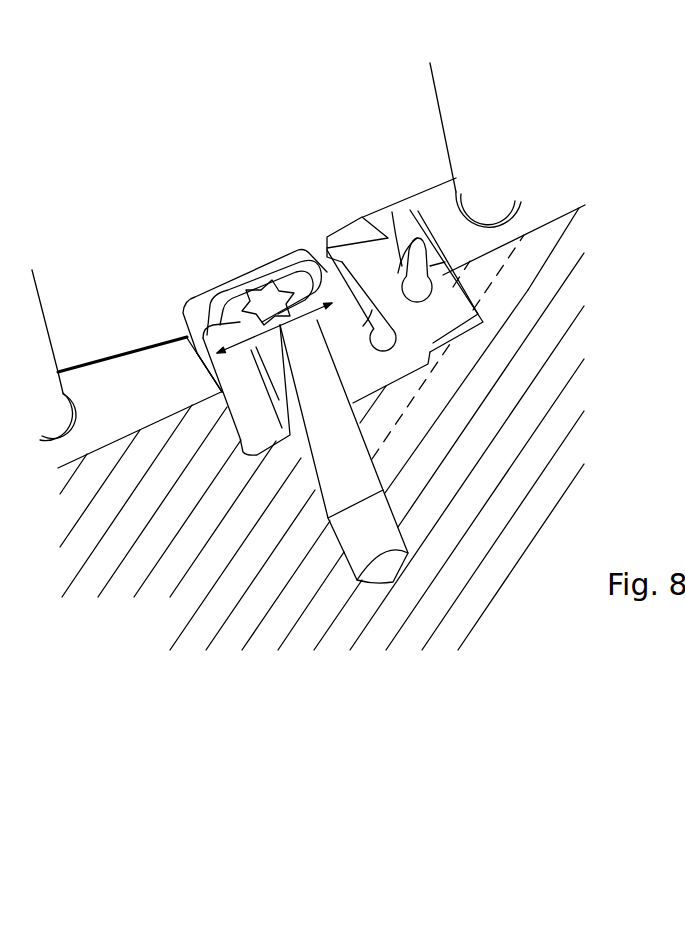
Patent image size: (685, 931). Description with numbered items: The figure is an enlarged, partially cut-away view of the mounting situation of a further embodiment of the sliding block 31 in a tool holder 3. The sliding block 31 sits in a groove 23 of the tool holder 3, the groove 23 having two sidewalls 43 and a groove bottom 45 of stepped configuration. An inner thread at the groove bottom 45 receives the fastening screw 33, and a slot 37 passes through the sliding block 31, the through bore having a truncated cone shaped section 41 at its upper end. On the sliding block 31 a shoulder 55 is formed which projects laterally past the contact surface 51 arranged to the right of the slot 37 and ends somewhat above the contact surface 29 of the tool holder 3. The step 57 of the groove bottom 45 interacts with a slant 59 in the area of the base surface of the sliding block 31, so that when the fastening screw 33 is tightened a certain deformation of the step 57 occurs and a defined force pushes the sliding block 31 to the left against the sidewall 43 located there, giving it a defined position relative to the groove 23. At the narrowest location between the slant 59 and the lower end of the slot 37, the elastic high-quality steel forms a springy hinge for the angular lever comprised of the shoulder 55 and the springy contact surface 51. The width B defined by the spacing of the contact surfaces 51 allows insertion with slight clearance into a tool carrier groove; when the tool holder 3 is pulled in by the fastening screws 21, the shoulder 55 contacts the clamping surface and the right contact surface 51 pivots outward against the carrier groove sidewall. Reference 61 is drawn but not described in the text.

The tool holder 3 is at (530, 102).
The fastening screws 21 is at (465, 108).
The groove 23 is at (188, 335).
The contact surface 29 is at (122, 402).
The sliding block 31 is at (200, 310).
The fastening screw 33 is at (270, 288).
The slot 37 is at (330, 252).
The truncated cone shaped section 41 is at (228, 300).
The sidewall 43 is at (217, 387).
The groove bottom 45 is at (357, 363).
The contact surface 51 is at (395, 222).
The shoulder 55 is at (440, 262).
The step 57 is at (447, 340).
The slant 59 is at (427, 352).
The opening 61 is at (428, 268).